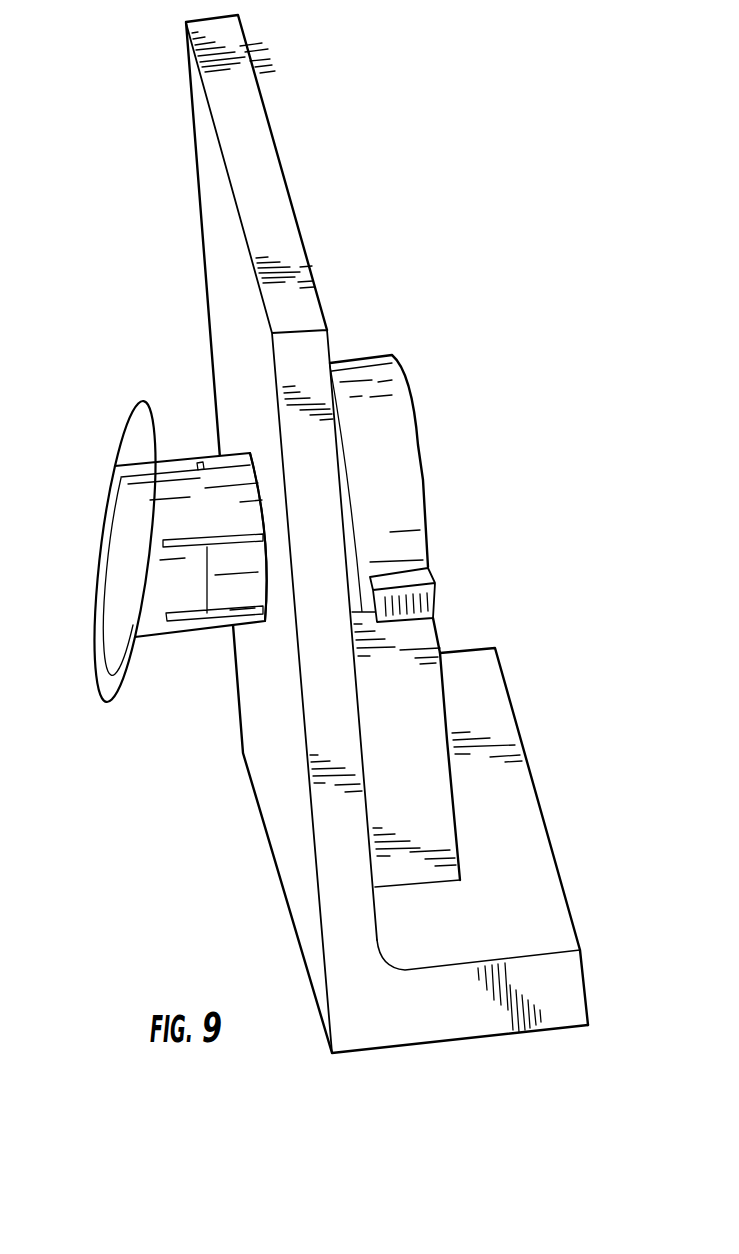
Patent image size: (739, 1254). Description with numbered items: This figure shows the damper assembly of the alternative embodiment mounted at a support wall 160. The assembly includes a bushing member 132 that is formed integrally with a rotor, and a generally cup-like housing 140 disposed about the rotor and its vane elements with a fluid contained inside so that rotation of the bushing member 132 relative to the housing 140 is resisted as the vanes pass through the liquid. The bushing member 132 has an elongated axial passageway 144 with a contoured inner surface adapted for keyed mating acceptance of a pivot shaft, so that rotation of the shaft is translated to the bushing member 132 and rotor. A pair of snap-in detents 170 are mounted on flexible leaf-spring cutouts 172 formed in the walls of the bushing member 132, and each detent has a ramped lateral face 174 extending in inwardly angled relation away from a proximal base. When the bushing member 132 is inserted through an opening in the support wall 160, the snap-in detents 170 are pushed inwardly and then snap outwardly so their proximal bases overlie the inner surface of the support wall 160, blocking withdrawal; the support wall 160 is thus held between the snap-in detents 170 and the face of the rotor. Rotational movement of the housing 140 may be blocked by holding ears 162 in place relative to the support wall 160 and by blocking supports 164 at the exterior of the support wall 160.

The bushing member 132 is at (132, 641).
The housing 140 is at (402, 465).
The elongated axial passageway 144 is at (120, 535).
The support wall 160 is at (283, 225).
The holding ears 162 is at (425, 597).
The blocking supports 164 is at (437, 712).
The snap-in detents 170 is at (228, 568).
The flexible leaf-spring cutouts 172 is at (182, 592).
The ramped lateral face 174 is at (262, 592).